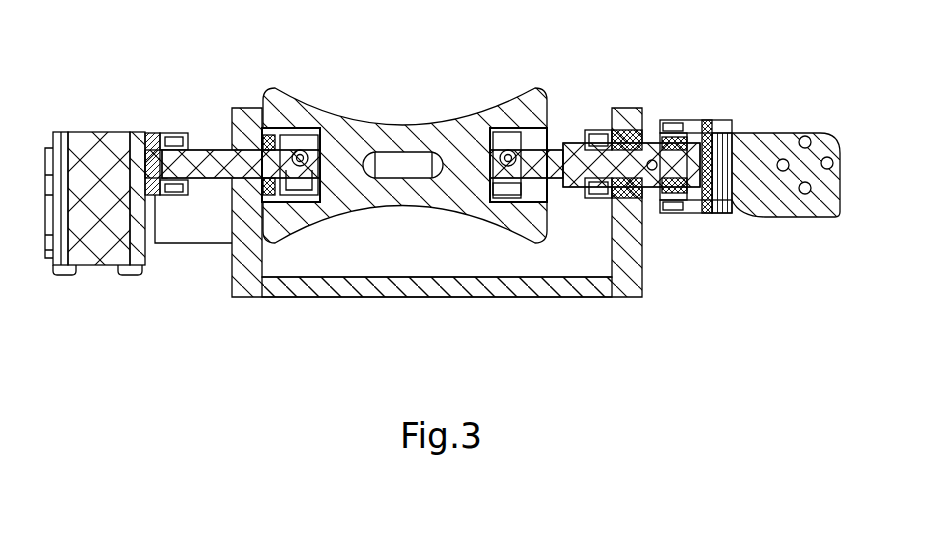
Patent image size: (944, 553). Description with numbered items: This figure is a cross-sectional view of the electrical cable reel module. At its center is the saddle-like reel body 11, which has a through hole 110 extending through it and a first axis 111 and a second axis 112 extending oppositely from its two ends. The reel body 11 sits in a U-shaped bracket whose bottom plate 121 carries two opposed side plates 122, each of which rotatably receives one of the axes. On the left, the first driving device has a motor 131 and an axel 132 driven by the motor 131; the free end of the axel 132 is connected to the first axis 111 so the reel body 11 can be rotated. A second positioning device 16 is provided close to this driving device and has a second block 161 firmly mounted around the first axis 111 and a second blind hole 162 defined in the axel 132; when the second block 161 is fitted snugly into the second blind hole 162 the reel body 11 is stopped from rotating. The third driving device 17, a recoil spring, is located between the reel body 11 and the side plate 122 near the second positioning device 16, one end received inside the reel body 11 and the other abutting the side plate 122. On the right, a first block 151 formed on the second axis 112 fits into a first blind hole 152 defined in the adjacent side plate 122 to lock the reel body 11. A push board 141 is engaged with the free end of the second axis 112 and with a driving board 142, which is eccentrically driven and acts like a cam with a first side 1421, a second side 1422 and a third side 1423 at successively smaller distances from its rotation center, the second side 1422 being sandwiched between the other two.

The reel body 11 is at (460, 120).
The through hole 110 is at (397, 166).
The first axis 111 is at (227, 135).
The second axis 112 is at (585, 144).
The bottom plate 121 is at (465, 290).
The side plates 122 is at (232, 265).
The motor 131 is at (104, 140).
The axel 132 is at (173, 198).
The push board 141 is at (687, 190).
The driving board 142 is at (792, 183).
The first side 1421 is at (703, 138).
The second side 1422 is at (738, 207).
The third side 1423 is at (777, 217).
The first block 151 is at (560, 144).
The first blind hole 152 is at (600, 130).
The second positioning device 16 is at (179, 108).
The second block 161 is at (183, 138).
The second blind hole 162 is at (175, 135).
The third driving device 17 is at (296, 200).